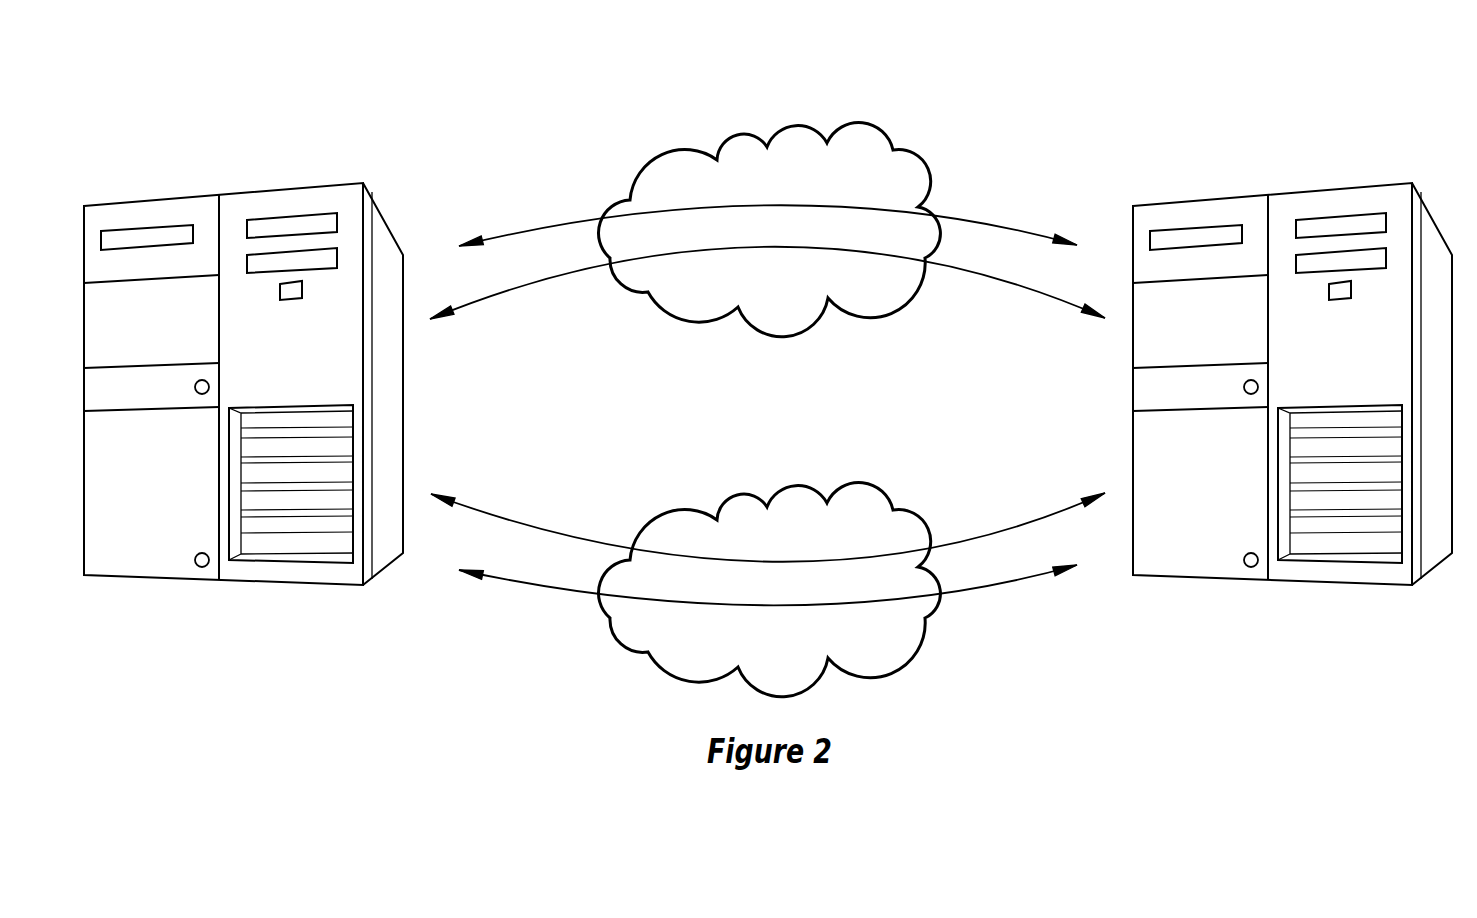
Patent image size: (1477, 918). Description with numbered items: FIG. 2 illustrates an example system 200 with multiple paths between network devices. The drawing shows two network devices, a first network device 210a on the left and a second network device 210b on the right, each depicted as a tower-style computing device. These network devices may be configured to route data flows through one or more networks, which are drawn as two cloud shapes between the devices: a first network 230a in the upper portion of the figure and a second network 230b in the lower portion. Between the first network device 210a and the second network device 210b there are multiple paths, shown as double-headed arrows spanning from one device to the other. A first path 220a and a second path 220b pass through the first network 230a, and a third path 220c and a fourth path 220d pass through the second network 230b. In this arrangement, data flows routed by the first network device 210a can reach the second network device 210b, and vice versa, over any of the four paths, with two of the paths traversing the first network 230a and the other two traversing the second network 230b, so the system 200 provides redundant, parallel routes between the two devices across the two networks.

The system 200 is at (1387, 93).
The first network device 210a is at (152, 203).
The second network device 210b is at (1390, 183).
The first path 220a is at (698, 206).
The second path 220b is at (698, 249).
The third path 220c is at (698, 562).
The fourth path 220d is at (698, 606).
The first network 230a is at (792, 186).
The second network 230b is at (792, 649).